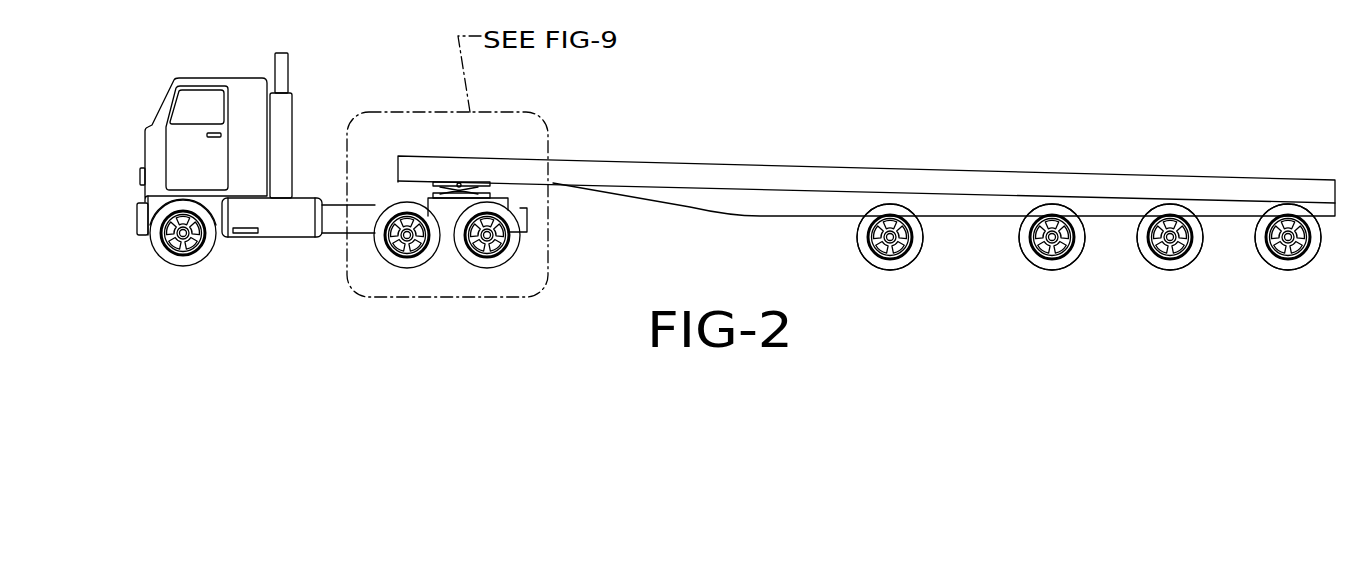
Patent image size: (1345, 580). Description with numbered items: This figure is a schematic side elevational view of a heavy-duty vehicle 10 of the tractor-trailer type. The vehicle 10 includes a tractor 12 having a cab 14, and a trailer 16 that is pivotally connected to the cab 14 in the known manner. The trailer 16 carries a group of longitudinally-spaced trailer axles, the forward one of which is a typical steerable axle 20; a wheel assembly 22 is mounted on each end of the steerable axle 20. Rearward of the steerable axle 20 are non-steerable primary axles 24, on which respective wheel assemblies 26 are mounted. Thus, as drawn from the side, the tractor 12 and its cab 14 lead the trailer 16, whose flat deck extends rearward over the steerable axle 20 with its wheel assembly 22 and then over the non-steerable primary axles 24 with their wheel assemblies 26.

The heavy-duty vehicle 10 is at (260, 315).
The tractor 12 is at (235, 70).
The cab 14 is at (184, 112).
The trailer 16 is at (679, 152).
The steerable axle 20 is at (899, 250).
The wheel assembly 22 is at (876, 258).
The non-steerable primary axles 24 is at (1064, 250).
The wheel assemblies 26 is at (1037, 258).